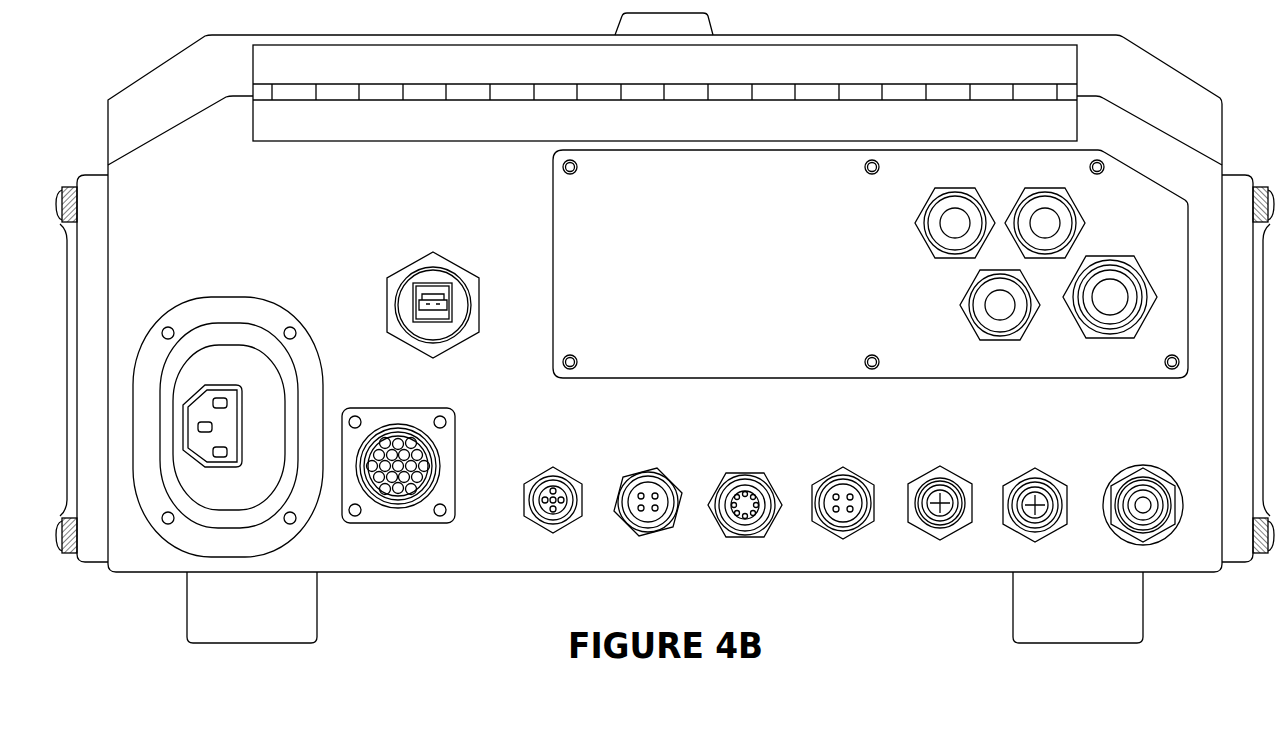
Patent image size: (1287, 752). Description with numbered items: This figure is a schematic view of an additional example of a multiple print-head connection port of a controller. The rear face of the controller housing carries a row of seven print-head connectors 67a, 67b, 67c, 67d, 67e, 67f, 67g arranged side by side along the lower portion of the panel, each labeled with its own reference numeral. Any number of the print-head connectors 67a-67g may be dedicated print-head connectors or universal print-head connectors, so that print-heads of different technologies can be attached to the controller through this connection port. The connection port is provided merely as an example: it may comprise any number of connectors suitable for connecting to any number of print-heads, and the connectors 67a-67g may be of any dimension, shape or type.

The print-head connector 67a is at (560, 472).
The print-head connector 67b is at (676, 482).
The print-head connector 67c is at (756, 482).
The print-head connector 67d is at (858, 476).
The print-head connector 67e is at (953, 480).
The print-head connector 67f is at (1051, 481).
The print-head connector 67g is at (1171, 485).